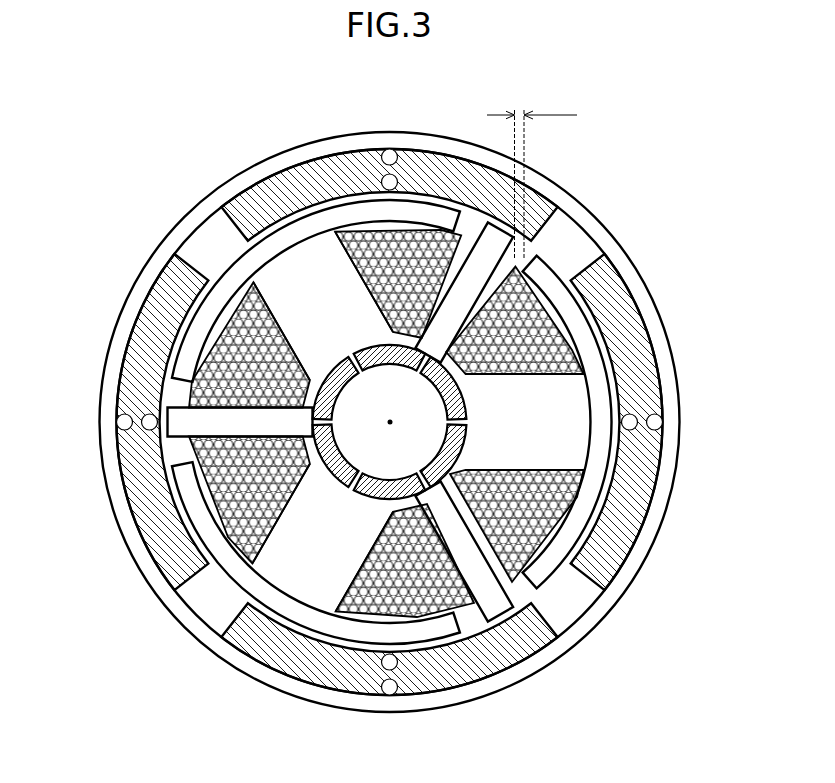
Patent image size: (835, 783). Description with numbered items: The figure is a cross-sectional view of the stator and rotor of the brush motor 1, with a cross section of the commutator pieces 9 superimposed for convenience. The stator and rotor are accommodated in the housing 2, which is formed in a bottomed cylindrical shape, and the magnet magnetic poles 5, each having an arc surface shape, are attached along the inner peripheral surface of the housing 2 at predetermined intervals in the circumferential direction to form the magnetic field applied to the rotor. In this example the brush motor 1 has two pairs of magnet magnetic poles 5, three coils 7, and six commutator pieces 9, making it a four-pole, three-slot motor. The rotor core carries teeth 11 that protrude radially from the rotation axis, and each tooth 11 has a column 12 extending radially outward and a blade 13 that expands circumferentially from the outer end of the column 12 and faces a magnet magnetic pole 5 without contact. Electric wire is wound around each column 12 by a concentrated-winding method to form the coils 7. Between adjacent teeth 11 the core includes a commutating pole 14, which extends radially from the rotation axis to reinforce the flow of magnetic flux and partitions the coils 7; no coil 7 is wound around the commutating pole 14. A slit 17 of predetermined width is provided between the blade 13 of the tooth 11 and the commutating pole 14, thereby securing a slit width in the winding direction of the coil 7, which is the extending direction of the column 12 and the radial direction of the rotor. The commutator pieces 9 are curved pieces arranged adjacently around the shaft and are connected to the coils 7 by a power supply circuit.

The brush motor 1 is at (92, 178).
The housing 2 is at (121, 308).
The magnet magnetic pole 5 is at (122, 369).
The coil 7 is at (183, 450).
The commutator piece 9 is at (438, 485).
The tooth 11 is at (328, 303).
The column 12 is at (565, 357).
The blade 13 is at (552, 267).
The commutating pole 14 is at (513, 627).
The slit 17 is at (532, 247).